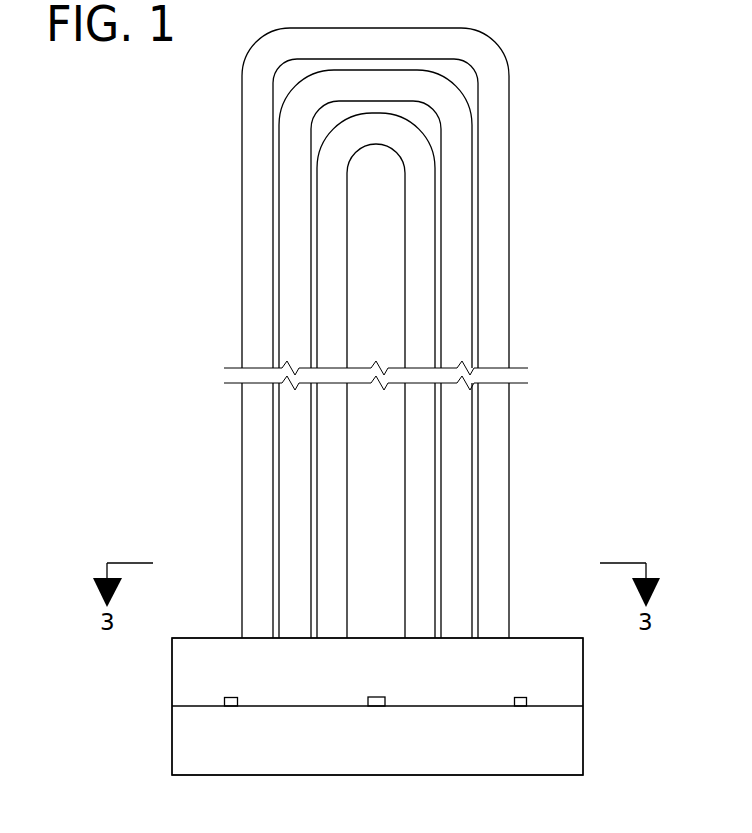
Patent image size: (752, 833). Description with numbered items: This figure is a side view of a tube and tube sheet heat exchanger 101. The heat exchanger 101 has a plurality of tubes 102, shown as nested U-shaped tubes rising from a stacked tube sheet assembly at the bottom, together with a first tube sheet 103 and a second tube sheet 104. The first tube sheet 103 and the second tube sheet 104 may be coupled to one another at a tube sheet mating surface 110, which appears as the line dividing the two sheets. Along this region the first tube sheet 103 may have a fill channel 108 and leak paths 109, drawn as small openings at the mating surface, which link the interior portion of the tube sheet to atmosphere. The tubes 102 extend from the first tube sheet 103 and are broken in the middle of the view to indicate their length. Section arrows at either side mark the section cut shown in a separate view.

The tube heat exchanger 101 is at (173, 140).
The tubes 102 is at (333, 318).
The first tube sheet 103 is at (193, 675).
The second tube sheet 104 is at (198, 747).
The fill channel 108 is at (373, 706).
The leak paths 109 is at (231, 706).
The tube sheet mating surface 110 is at (553, 705).